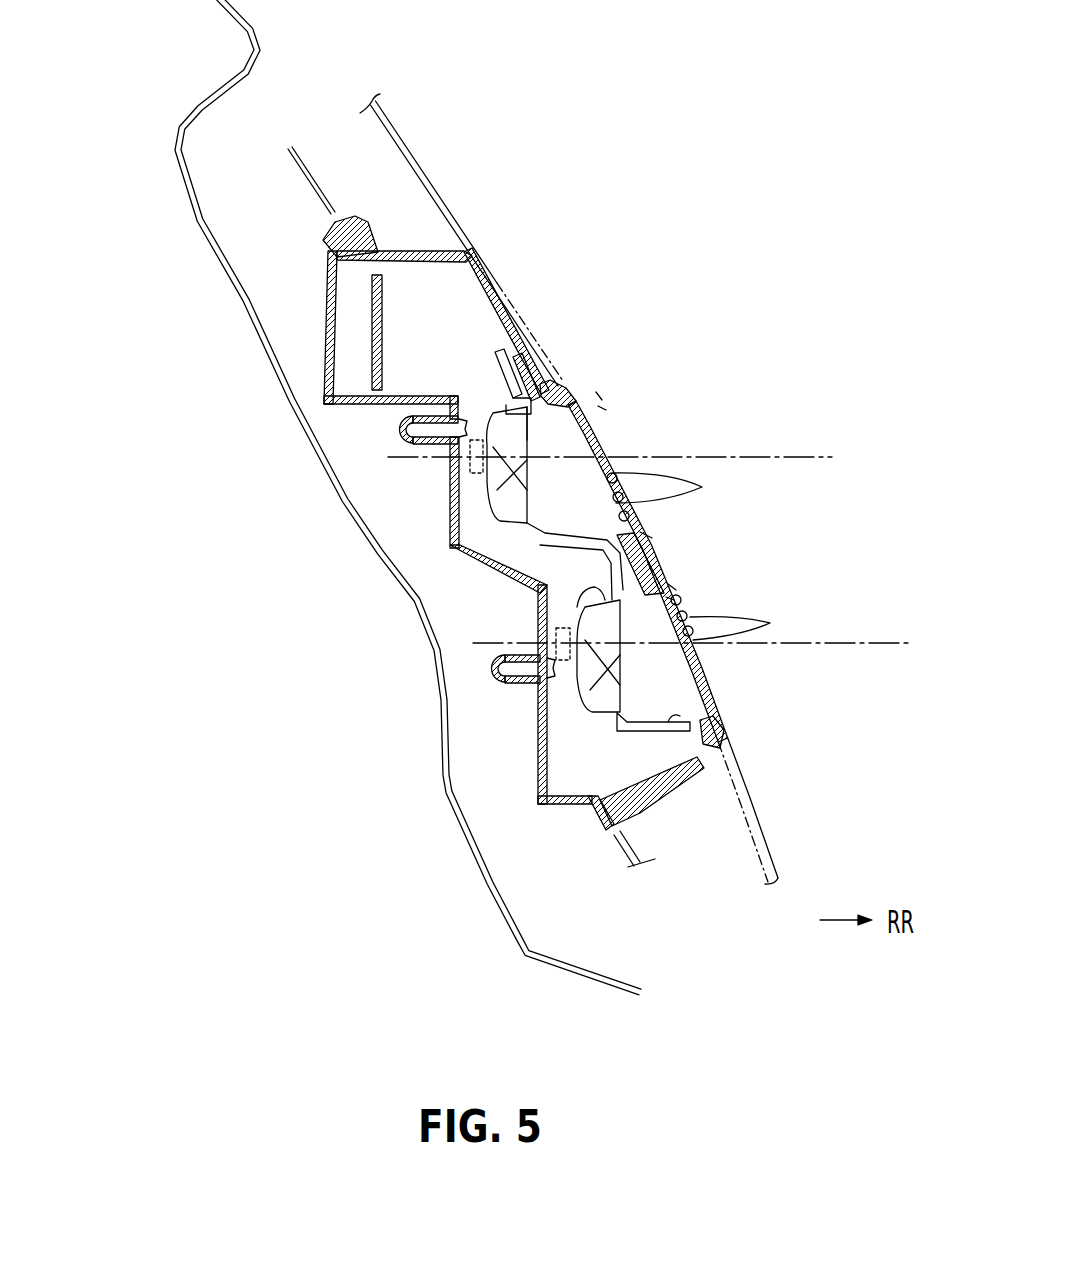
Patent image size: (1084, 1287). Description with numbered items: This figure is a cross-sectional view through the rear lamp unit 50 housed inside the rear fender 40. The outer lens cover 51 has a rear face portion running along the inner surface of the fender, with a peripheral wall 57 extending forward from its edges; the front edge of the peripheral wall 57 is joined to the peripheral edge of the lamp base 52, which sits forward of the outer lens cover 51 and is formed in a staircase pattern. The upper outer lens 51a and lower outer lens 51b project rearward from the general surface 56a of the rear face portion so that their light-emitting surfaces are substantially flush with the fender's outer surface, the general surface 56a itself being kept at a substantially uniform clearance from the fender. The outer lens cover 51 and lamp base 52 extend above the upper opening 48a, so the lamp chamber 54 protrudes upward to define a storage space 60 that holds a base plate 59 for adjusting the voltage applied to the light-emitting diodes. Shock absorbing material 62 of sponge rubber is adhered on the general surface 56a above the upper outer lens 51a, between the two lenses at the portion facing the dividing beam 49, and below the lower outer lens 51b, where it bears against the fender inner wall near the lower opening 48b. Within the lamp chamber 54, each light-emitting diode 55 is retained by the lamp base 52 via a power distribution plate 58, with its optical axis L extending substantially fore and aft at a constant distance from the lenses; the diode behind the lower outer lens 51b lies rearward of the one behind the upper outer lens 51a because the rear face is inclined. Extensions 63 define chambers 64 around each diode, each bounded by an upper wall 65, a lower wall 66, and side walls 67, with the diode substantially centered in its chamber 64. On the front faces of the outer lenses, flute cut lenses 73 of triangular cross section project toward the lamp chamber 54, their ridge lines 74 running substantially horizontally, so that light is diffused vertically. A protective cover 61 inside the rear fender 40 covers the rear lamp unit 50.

The rear fender 40 is at (398, 130).
The upper opening 48a is at (598, 393).
The lower opening 48b is at (673, 585).
The dividing beam 49 is at (650, 535).
The rear lamp unit 50 is at (628, 387).
The outer lens cover 51 is at (500, 286).
The upper outer lens 51a is at (600, 408).
The lower outer lens 51b is at (668, 598).
The lamp base 52 is at (314, 290).
The lamp chamber 54 is at (577, 450).
The light-emitting diode 55 is at (537, 430).
The general surface 56a is at (708, 271).
The peripheral wall 57 is at (407, 248).
The power distribution plate 58 is at (477, 553).
The base plate 59 is at (385, 328).
The storage space 60 is at (453, 300).
The protective cover 61 is at (178, 126).
The shock absorbing material 62 is at (565, 392).
The extension 63 is at (578, 721).
The chamber 64 is at (540, 513).
The upper wall 65 is at (507, 413).
The lower wall 66 is at (547, 507).
The side wall 67 is at (500, 480).
The flute cut lens 73 is at (703, 497).
The ridge line 74 is at (769, 617).
The optical axis L is at (800, 457).